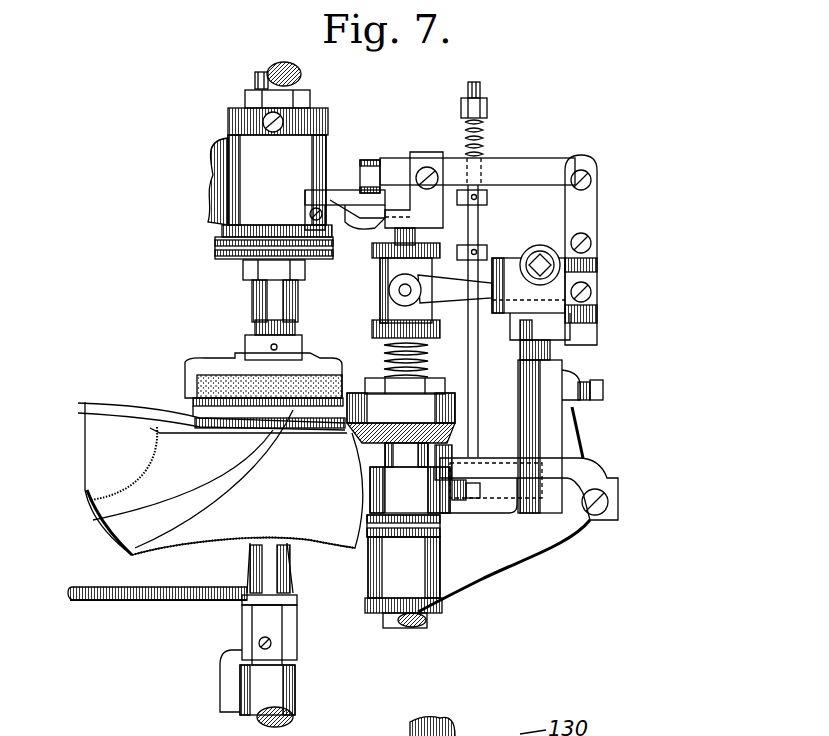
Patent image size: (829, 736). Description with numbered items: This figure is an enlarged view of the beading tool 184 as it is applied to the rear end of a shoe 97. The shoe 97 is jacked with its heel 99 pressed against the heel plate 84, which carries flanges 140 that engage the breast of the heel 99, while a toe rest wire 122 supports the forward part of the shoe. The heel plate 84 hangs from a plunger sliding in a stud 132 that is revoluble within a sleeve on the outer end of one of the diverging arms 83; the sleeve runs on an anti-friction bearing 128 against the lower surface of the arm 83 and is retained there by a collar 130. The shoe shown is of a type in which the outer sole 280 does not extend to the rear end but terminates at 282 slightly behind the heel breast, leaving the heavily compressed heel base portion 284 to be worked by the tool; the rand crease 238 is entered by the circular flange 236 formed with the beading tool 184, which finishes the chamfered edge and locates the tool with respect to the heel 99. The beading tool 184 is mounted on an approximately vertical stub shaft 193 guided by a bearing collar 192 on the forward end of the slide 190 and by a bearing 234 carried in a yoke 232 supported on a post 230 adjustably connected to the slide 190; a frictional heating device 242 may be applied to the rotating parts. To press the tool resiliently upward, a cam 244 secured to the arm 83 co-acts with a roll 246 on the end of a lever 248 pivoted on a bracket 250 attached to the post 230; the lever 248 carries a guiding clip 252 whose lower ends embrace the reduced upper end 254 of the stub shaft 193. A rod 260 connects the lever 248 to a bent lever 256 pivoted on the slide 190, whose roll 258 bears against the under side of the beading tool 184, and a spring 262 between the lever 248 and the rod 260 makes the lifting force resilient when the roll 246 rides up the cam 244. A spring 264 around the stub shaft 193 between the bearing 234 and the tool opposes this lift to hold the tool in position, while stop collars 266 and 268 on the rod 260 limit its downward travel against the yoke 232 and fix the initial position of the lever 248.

The collar 130 is at (232, 120).
The diverging arm 83 is at (213, 165).
The anti-friction bearing 128 is at (225, 245).
The stud 132 is at (262, 300).
The heel plate 84 is at (255, 355).
The flanges 140 is at (210, 385).
The outer sole 280 is at (110, 405).
The shoe 97 is at (237, 510).
The heel 99 is at (160, 428).
The termination of outer sole 282 is at (157, 427).
The rand crease 238 is at (93, 520).
The heel base portion 284 is at (135, 548).
The toe rest wire 122 is at (140, 597).
The cam 244 is at (345, 192).
The roll 246 is at (370, 162).
The guiding clip 252 is at (430, 152).
The reduced upper end of stub shaft 254 is at (413, 236).
The lever 248 is at (492, 160).
The spring 262 is at (480, 128).
The upper stop collar 268 is at (487, 197).
The lower stop collar 266 is at (483, 258).
The bracket 250 is at (588, 215).
The yoke 232 is at (593, 276).
The post 230 is at (560, 348).
The rod 260 is at (550, 362).
The circular flange 236 is at (465, 438).
The bearing 234 is at (385, 265).
The spring 264 is at (380, 357).
The beading tool 184 is at (437, 407).
The stub shaft 193 is at (368, 485).
The bearing collar 192 is at (420, 572).
The roll 258 is at (450, 488).
The slide 190 is at (602, 470).
The bent lever 256 is at (562, 470).
The frictional heating device 242 is at (520, 503).